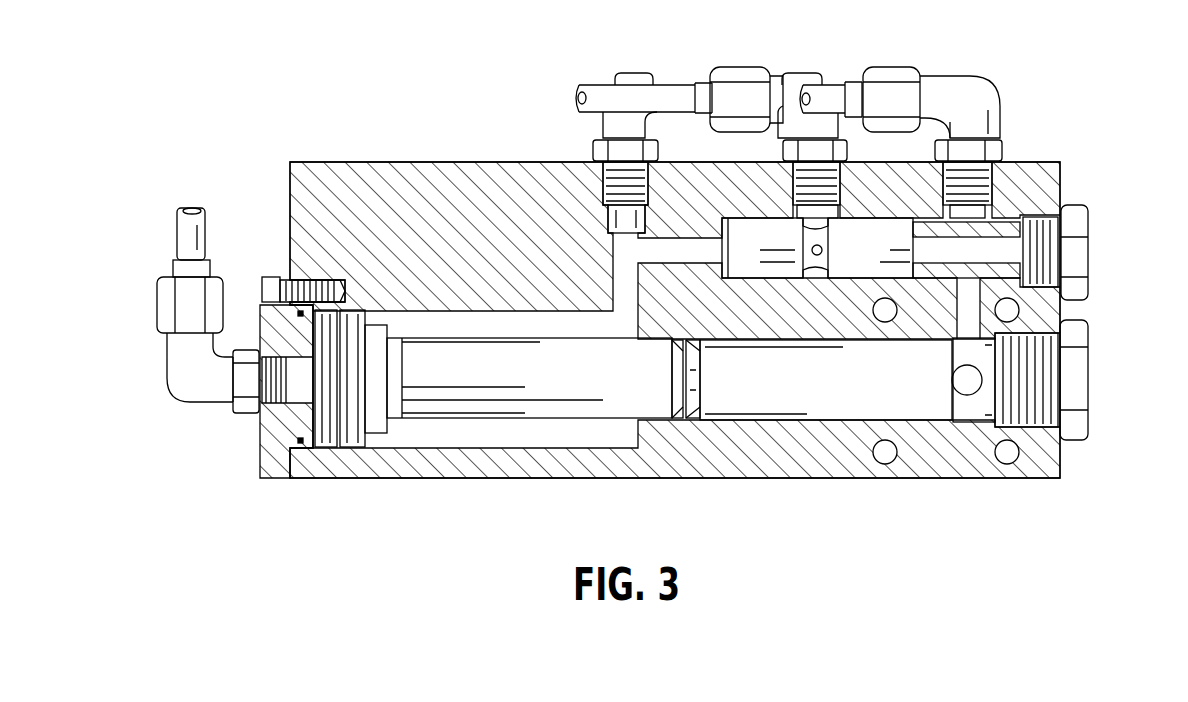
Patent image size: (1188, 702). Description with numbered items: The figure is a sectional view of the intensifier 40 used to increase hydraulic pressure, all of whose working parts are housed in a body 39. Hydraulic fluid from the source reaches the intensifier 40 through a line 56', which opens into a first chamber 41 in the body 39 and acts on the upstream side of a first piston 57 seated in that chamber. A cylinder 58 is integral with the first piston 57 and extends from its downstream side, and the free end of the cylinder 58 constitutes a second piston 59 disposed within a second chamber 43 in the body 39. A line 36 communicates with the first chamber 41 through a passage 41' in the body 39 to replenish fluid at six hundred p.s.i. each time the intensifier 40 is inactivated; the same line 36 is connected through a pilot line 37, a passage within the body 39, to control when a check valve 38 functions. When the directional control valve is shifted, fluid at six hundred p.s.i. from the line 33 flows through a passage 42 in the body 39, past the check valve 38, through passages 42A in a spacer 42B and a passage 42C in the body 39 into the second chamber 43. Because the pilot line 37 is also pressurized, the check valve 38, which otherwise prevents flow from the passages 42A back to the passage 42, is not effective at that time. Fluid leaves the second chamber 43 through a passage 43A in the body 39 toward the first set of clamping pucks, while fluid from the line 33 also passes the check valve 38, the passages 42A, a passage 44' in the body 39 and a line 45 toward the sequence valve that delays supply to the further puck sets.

The line 33 is at (678, 82).
The line 36 is at (640, 75).
The pilot line 37 is at (702, 260).
The check valve 38 is at (888, 218).
The body 39 is at (452, 160).
The intensifier 40 is at (373, 148).
The first chamber 41 is at (475, 409).
The passage 41' is at (648, 298).
The passage 42 is at (855, 183).
The passages 42A is at (985, 222).
The spacer 42B is at (888, 345).
The passage 42C is at (962, 306).
The second chamber 43 is at (806, 415).
The passage 43A is at (967, 380).
The passage 44' is at (929, 142).
The line 45 is at (995, 106).
The line 56' is at (210, 307).
The first piston 57 is at (356, 449).
The cylinder 58 is at (539, 338).
The second piston 59 is at (706, 382).